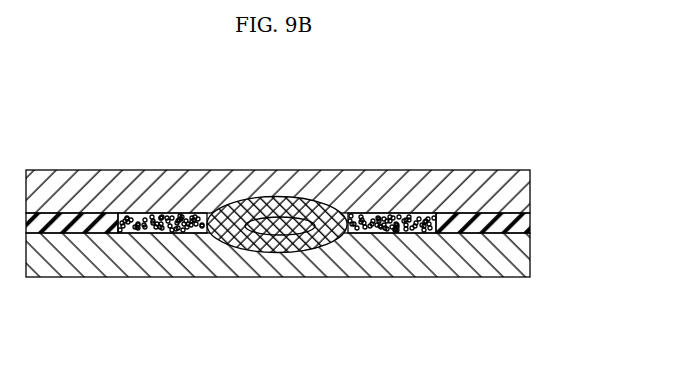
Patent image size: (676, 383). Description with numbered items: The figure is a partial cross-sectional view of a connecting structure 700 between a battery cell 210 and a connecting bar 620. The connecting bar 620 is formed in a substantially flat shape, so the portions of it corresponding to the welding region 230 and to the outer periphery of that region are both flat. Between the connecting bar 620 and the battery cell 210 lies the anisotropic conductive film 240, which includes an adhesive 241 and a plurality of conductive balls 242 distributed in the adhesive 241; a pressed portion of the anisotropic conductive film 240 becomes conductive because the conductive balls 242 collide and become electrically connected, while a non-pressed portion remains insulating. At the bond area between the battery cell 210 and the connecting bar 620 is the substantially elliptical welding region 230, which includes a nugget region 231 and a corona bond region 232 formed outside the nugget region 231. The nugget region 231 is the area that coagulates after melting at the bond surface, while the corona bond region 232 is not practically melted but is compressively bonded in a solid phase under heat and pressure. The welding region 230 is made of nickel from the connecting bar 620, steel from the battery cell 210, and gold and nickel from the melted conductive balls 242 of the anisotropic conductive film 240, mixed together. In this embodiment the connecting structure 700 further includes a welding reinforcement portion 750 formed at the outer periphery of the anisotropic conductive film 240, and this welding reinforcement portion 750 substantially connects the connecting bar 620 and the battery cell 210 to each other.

The connecting structure 700 is at (476, 114).
The connecting bar 620 is at (322, 170).
The battery cell 210 is at (400, 263).
The welding reinforcement portion 750 is at (67, 234).
The anisotropic conductive film 240 is at (277, 291).
The adhesive 241 is at (143, 234).
The conductive balls 242 is at (186, 234).
The welding region 230 is at (277, 283).
The nugget region 231 is at (268, 235).
The corona bond region 232 is at (300, 242).